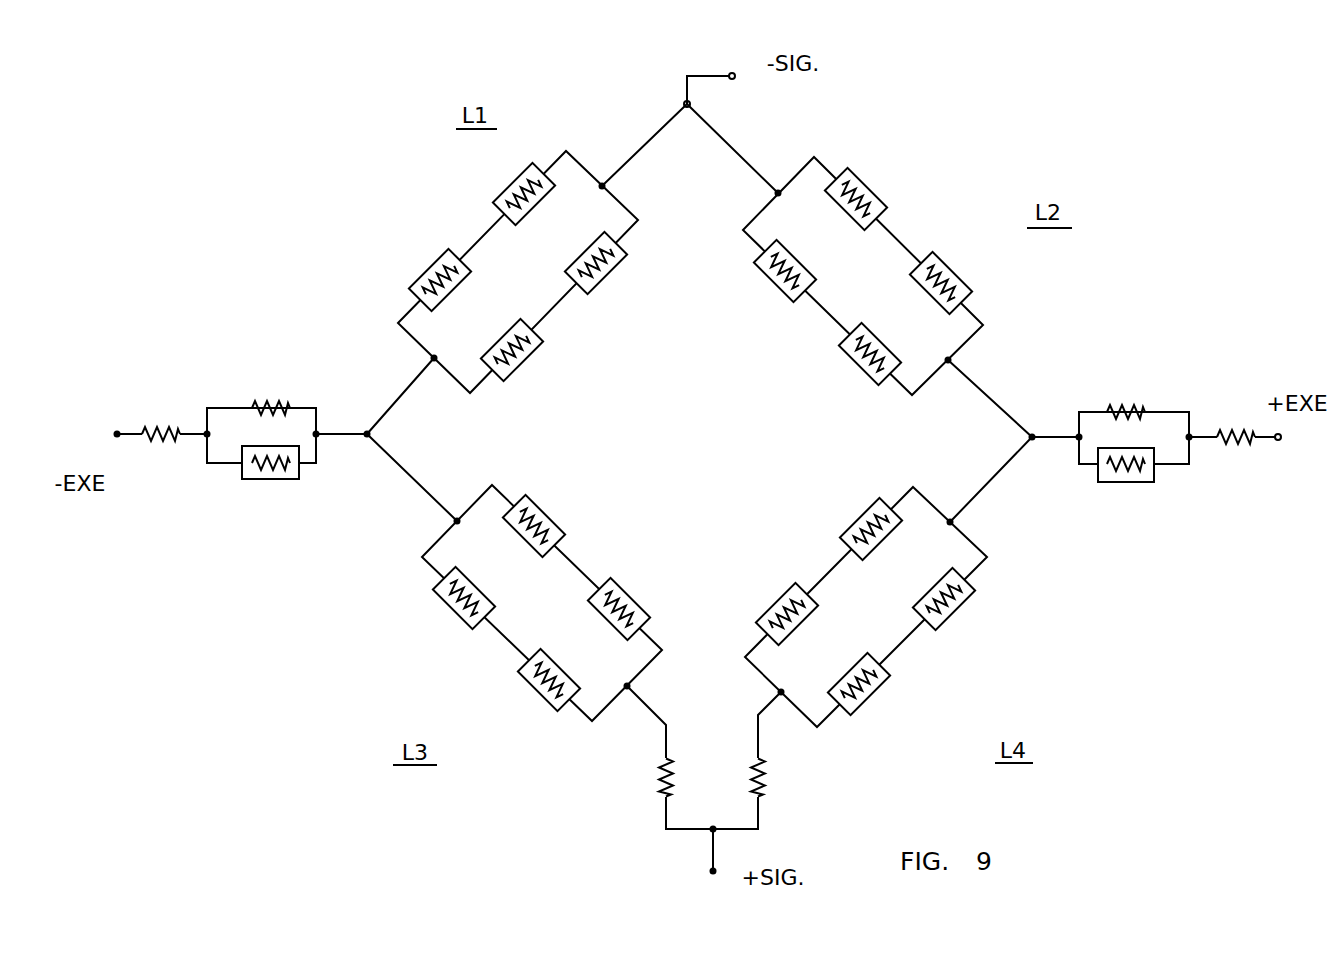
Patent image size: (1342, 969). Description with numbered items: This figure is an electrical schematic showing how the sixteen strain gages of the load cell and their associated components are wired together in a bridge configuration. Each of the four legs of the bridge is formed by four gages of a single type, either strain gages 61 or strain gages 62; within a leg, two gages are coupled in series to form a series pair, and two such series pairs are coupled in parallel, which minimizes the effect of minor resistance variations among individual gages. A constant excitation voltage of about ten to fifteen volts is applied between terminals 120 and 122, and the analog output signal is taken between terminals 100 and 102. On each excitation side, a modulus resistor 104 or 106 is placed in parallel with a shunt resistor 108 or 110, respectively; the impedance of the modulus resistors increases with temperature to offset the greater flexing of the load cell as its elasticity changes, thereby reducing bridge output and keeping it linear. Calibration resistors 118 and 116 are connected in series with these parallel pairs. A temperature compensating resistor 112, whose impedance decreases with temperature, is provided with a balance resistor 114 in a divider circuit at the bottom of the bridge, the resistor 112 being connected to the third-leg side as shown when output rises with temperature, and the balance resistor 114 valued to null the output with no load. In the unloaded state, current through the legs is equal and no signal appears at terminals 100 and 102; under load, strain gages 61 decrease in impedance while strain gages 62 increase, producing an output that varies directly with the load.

The strain gage 61 is at (435, 260).
The strain gage 62 is at (943, 257).
The terminal 100 is at (734, 71).
The terminal 102 is at (710, 872).
The modulus resistor 104 is at (270, 479).
The modulus resistor 106 is at (1127, 482).
The shunt resistor 108 is at (273, 400).
The shunt resistor 110 is at (1123, 407).
The temperature compensating resistor 112 is at (660, 778).
The balance resistor 114 is at (767, 775).
The calibration resistor 116 is at (1227, 432).
The calibration resistor 118 is at (167, 425).
The terminal 120 is at (115, 432).
The terminal 122 is at (1281, 441).